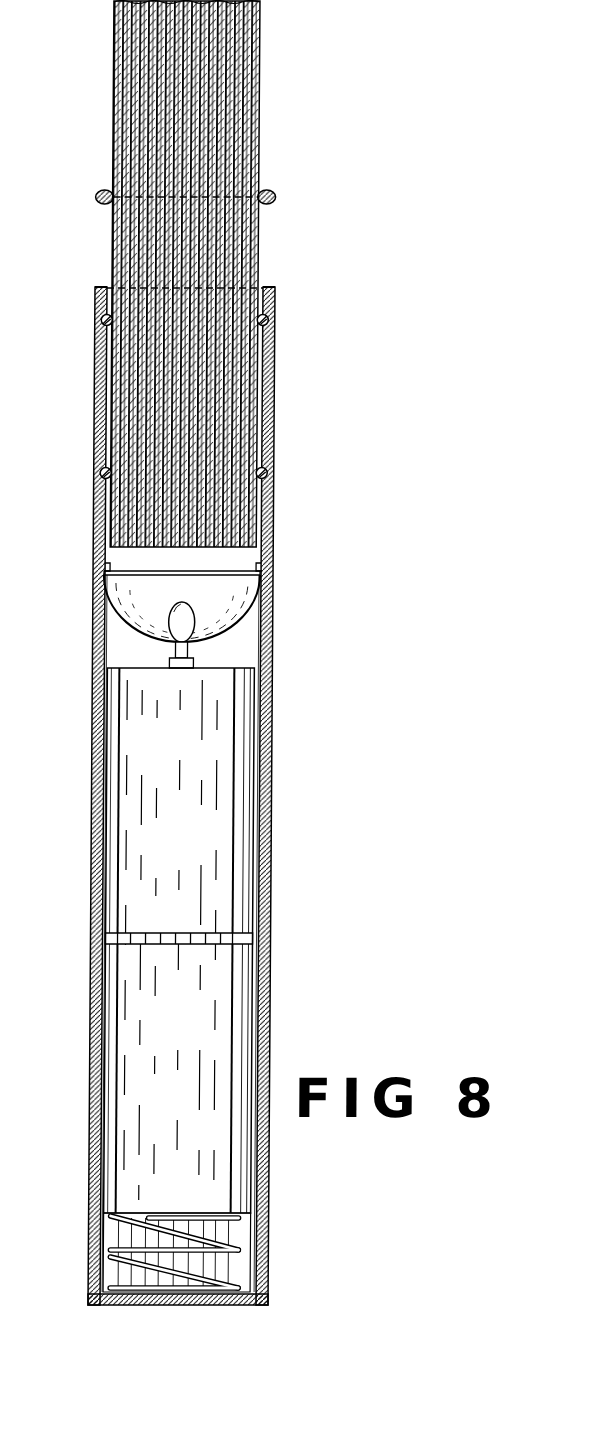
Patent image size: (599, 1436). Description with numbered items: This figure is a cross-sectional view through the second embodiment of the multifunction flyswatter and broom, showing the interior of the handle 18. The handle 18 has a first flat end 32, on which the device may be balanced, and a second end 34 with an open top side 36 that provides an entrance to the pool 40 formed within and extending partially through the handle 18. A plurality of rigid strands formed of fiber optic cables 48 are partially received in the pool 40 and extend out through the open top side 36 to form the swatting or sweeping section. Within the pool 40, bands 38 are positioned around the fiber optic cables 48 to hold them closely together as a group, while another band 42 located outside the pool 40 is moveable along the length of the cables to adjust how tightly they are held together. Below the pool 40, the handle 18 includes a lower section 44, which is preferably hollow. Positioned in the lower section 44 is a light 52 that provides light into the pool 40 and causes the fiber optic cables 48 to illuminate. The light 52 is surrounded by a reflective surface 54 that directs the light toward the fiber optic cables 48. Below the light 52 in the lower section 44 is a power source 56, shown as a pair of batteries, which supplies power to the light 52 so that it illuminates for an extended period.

The handle 18 is at (274, 1010).
The first flat end 32 is at (269, 1255).
The second end 34 is at (277, 305).
The open top side 36 is at (262, 286).
The bands 38 is at (276, 468).
The pool 40 is at (197, 756).
The band 42 is at (275, 197).
The lower section 44 is at (96, 835).
The fiber optic cables 48 is at (259, 32).
The light 52 is at (192, 623).
The reflective surface 54 is at (272, 574).
The power source 56 is at (229, 990).